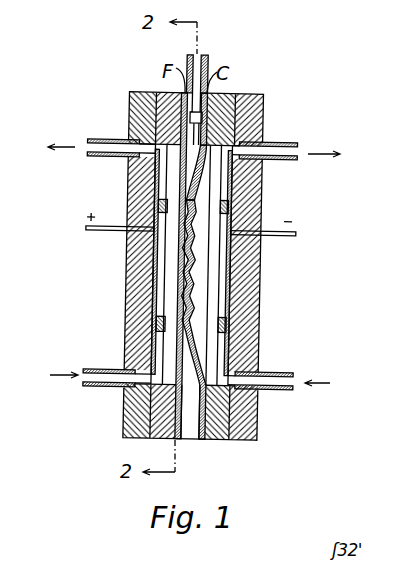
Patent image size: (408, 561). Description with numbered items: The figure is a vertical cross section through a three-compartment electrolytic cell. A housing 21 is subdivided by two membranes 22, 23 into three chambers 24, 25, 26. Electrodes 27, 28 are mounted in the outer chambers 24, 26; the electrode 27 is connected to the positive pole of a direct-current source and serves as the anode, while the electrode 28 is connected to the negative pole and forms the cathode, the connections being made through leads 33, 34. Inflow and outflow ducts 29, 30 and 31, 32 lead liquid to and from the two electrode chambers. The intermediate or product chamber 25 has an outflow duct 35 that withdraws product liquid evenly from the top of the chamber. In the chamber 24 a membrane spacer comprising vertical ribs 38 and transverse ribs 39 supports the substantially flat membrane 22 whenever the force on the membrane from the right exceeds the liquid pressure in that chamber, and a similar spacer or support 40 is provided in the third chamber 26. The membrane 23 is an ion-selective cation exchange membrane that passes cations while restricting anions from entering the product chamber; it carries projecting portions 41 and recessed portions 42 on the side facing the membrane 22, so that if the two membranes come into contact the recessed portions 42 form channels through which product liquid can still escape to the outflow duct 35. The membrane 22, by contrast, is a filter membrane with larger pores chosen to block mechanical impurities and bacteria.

The housing 21 is at (255, 108).
The membrane 22 is at (188, 275).
The membrane 23 is at (190, 287).
The chamber 24 is at (158, 350).
The product chamber 25 is at (193, 380).
The chamber 26 is at (212, 362).
The electrode 27 is at (154, 182).
The electrode 28 is at (233, 216).
The inflow duct 29 is at (110, 390).
The outflow duct 30 is at (104, 139).
The inflow duct 31 is at (278, 392).
The outflow duct 32 is at (280, 143).
The lead 33 is at (105, 231).
The lead 34 is at (292, 236).
The outflow duct 35 is at (201, 55).
The vertical ribs 38 is at (158, 258).
The transverse ribs 39 is at (163, 327).
The spacer or support 40 is at (229, 257).
The projecting portions 41 is at (228, 335).
The recessed portions 42 is at (193, 197).